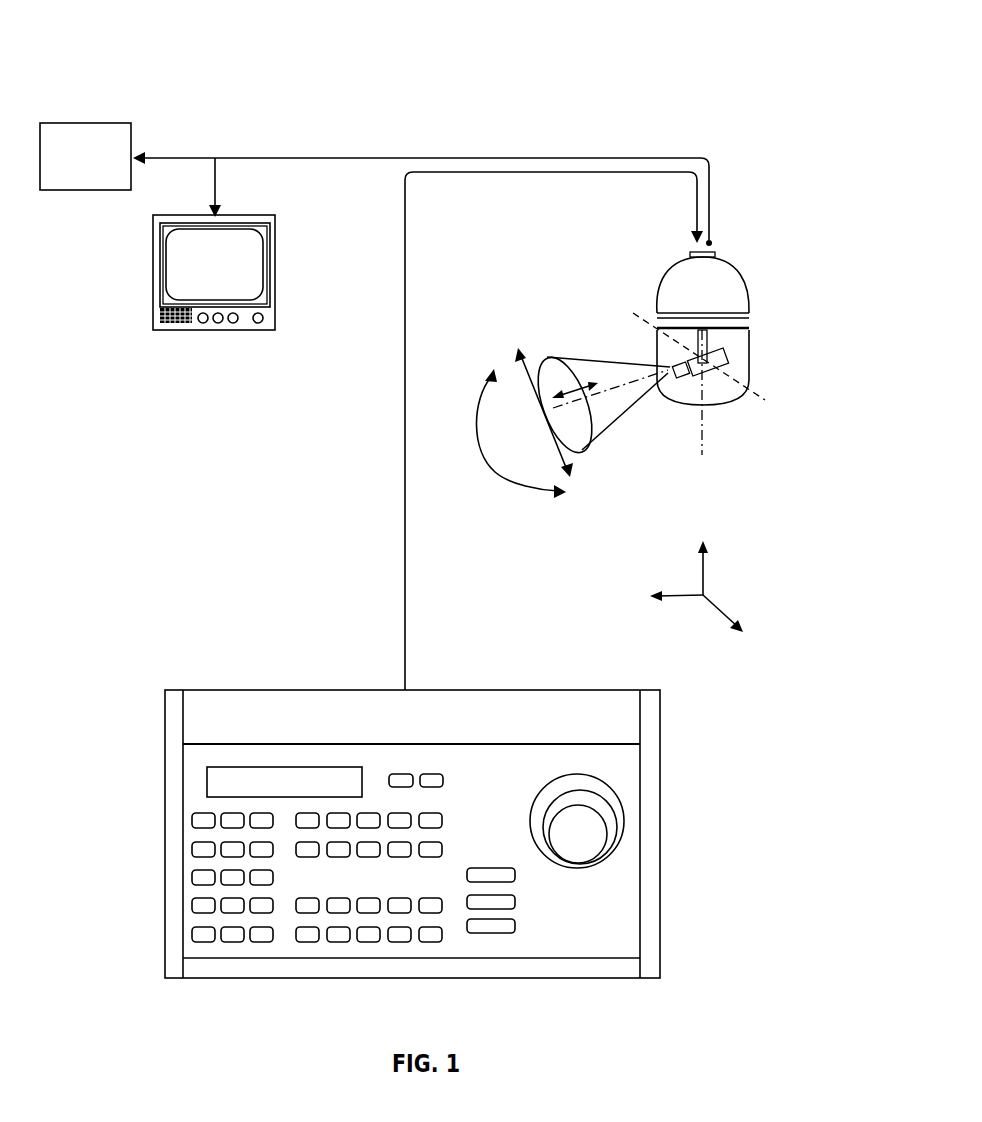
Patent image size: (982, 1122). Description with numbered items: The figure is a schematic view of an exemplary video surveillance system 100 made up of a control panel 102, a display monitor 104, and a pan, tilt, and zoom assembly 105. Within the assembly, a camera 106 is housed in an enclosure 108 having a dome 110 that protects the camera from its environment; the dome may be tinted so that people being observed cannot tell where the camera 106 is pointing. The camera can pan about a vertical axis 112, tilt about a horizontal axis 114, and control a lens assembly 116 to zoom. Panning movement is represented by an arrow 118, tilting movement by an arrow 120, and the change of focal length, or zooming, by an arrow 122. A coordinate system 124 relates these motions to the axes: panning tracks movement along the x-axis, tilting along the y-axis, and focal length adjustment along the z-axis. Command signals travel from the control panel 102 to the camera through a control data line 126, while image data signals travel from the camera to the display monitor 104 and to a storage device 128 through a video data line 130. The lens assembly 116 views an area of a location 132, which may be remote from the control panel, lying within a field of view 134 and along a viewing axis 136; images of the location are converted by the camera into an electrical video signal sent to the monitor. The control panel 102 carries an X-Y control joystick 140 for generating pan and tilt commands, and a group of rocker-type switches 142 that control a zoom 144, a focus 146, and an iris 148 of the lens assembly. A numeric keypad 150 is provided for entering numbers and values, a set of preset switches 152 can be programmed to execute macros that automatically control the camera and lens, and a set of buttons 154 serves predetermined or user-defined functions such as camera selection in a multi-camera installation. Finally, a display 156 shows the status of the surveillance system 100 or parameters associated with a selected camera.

The video surveillance system 100 is at (118, 35).
The control panel 102 is at (661, 853).
The display monitor 104 is at (153, 270).
The pan, tilt, and zoom (PTZ) assembly 105 is at (733, 238).
The camera 106 is at (722, 352).
The enclosure 108 is at (737, 294).
The dome 110 is at (727, 404).
The vertical axis 112 is at (700, 434).
The horizontal axis 114 is at (752, 393).
The lens assembly 116 is at (670, 365).
The arrow 118 is at (483, 415).
The arrow 120 is at (527, 368).
The arrow 122 is at (547, 358).
The coordinate system 124 is at (705, 572).
The control data line 126 is at (548, 174).
The storage device 128 is at (87, 124).
The video data line 130 is at (459, 156).
The location 132 is at (473, 469).
The field of view 134 is at (594, 364).
The viewing axis 136 is at (600, 393).
The X-Y control joystick 140 is at (588, 836).
The rocker-type switches 142 is at (486, 928).
The zoom 144 is at (497, 935).
The focus 146 is at (467, 902).
The iris 148 is at (477, 868).
The numeric keypad 150 is at (156, 813).
The preset switches 152 is at (447, 813).
The buttons 154 is at (444, 895).
The display 156 is at (206, 783).